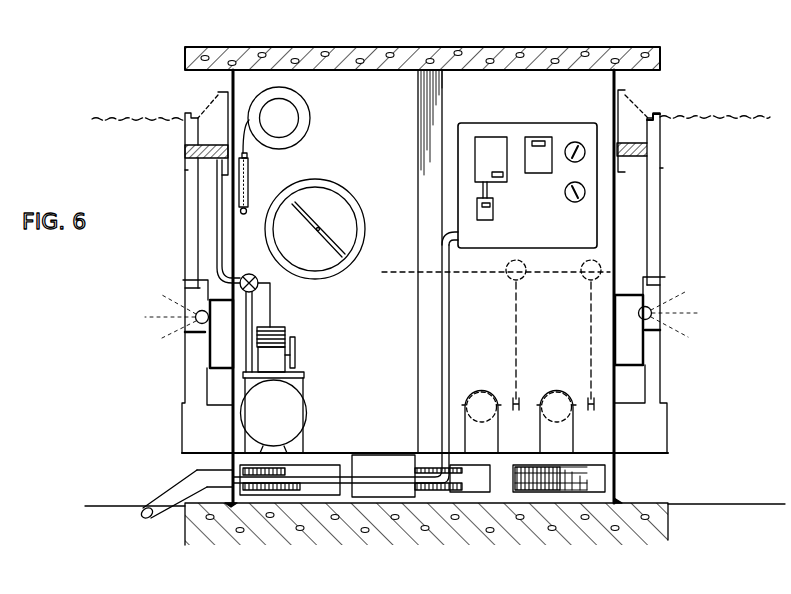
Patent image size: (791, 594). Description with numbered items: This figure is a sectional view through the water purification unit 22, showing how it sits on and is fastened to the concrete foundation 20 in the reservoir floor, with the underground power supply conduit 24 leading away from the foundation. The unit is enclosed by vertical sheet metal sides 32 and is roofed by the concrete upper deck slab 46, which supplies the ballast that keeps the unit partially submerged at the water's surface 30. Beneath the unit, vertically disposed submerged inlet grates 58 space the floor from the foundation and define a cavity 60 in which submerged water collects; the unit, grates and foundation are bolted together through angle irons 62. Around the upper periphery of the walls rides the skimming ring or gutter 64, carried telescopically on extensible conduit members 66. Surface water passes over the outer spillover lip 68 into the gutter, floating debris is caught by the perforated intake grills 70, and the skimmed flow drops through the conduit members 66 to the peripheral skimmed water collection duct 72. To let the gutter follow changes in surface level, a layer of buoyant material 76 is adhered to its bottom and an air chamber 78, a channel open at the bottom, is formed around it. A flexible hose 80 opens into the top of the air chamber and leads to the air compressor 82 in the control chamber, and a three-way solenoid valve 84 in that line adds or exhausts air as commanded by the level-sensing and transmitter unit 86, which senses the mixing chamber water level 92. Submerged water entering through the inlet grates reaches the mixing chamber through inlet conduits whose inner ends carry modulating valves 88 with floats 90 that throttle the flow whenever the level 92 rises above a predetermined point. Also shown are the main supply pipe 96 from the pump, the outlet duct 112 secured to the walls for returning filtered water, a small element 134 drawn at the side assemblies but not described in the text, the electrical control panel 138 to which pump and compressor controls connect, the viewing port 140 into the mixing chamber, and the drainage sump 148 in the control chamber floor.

The foundation 20 is at (608, 541).
The water purification unit 22 is at (542, 43).
The underground power supply conduit 24 is at (446, 335).
The water's surface 30 is at (138, 118).
The vertical sheet metal sides 32 is at (236, 247).
The upper deck slab 46 is at (662, 52).
The submerged inlet grates 58 is at (297, 498).
The cavity 60 is at (475, 479).
The angle irons 62 is at (228, 503).
The skimming ring or gutter 64 is at (192, 132).
The extensible conduit members 66 is at (187, 268).
The outer spillover lip 68 is at (658, 115).
The skimming gutter intake grills 70 is at (632, 102).
The skimmed water collection duct 72 is at (192, 430).
The buoyant material 76 is at (190, 153).
The air chamber 78 is at (190, 172).
The flexible conduit or hose 80 is at (231, 226).
The air compressor 82 is at (297, 382).
The three-way solenoid actuated valve 84 is at (264, 270).
The level-sensing and transmitter unit 86 is at (277, 358).
The modulating valves 88 is at (508, 396).
The floats 90 is at (583, 275).
The mixing chamber water level 92 is at (400, 270).
The main supply pipe 96 is at (290, 125).
The outlet duct 112 is at (213, 357).
The float ball 134 is at (202, 323).
The electrical control panel 138 is at (530, 125).
The viewing port 140 is at (343, 215).
The drainage sump 148 is at (395, 455).